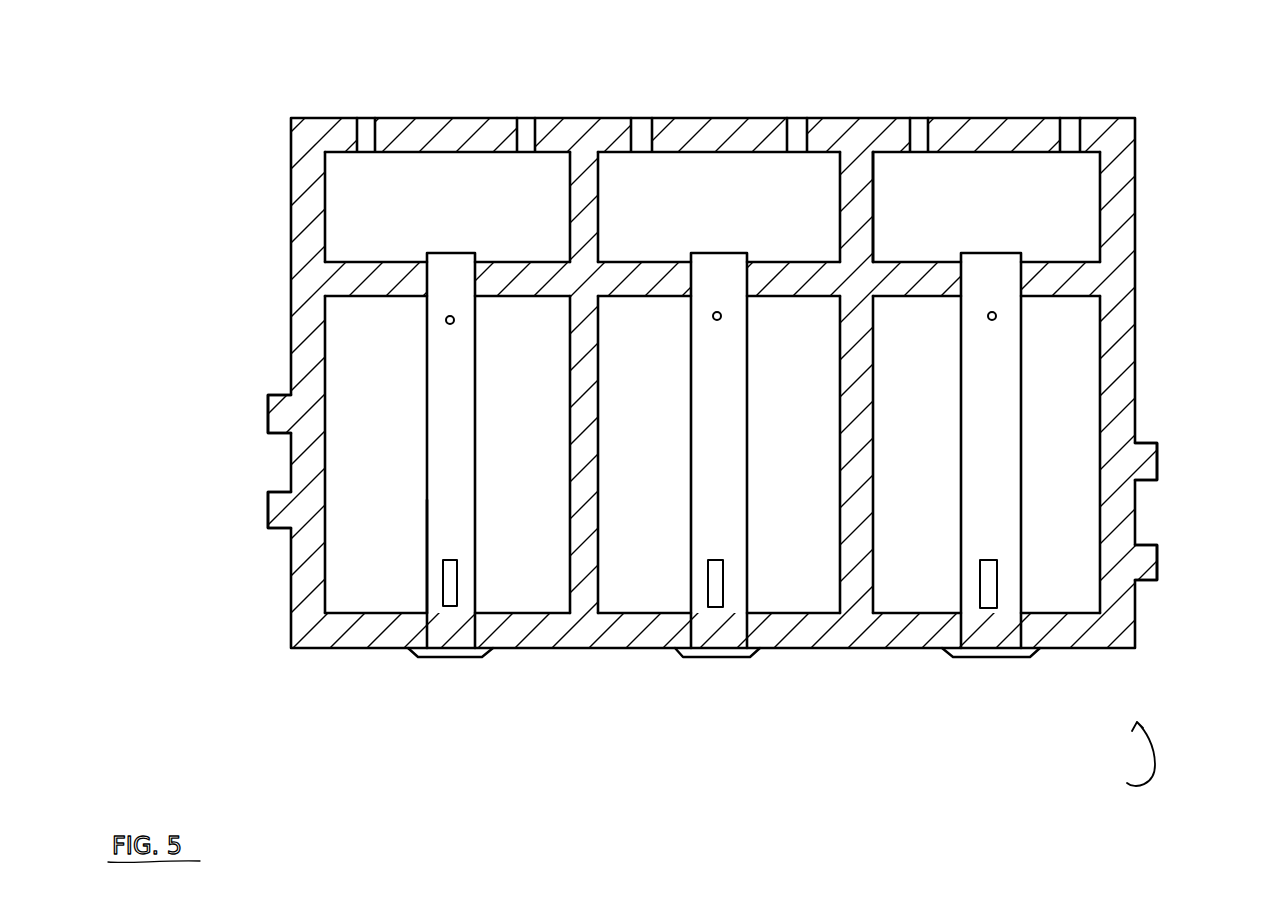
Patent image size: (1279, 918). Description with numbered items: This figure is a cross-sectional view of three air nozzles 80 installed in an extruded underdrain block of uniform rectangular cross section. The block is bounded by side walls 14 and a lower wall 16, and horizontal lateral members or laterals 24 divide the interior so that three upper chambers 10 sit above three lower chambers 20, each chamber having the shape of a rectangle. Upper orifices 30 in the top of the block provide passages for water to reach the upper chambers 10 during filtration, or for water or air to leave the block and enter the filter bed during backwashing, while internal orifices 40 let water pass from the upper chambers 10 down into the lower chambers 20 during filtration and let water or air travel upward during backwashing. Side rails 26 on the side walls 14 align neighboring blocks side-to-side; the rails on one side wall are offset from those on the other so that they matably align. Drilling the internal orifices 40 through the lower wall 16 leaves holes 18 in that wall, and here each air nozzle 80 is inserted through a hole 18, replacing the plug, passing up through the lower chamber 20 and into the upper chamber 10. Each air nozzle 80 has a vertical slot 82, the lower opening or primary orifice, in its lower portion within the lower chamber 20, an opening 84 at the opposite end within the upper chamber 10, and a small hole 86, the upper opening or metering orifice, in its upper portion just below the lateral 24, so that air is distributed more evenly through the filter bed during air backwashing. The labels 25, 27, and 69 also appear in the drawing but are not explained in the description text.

The upper chamber 10 is at (1087, 207).
The side wall 14 is at (1135, 193).
The lower wall 16 is at (1130, 655).
The hole 18 is at (477, 637).
The lower chamber 20 is at (1150, 365).
The lateral 24 is at (858, 185).
The right tabs 25 is at (1165, 555).
The side rail 26 is at (268, 503).
The shelf 27 is at (1080, 275).
The upper orifice 30 is at (363, 118).
The internal orifice 40 is at (427, 258).
The direction arrow 69 is at (1135, 768).
The air nozzle 80 is at (420, 503).
The vertical slot 82 is at (448, 627).
The opening 84 is at (466, 253).
The small hole 86 is at (440, 320).